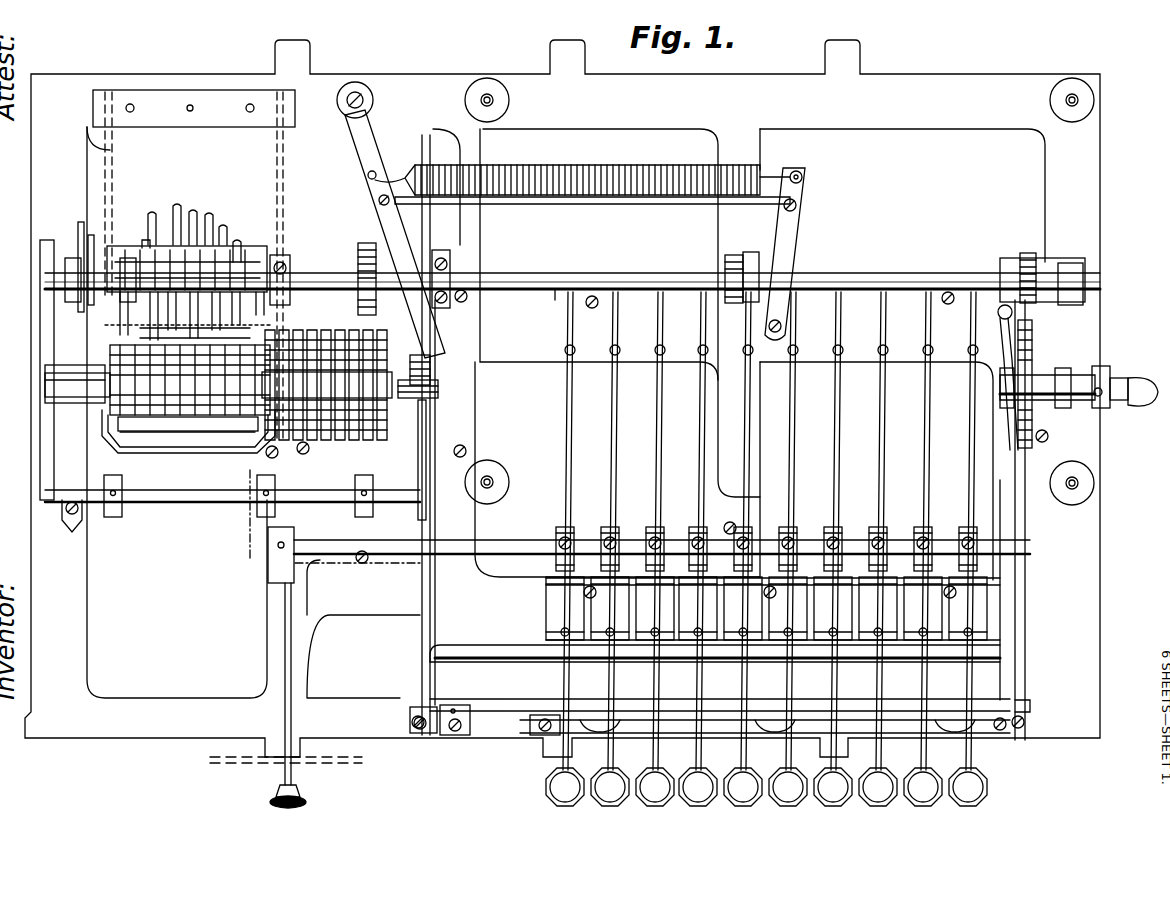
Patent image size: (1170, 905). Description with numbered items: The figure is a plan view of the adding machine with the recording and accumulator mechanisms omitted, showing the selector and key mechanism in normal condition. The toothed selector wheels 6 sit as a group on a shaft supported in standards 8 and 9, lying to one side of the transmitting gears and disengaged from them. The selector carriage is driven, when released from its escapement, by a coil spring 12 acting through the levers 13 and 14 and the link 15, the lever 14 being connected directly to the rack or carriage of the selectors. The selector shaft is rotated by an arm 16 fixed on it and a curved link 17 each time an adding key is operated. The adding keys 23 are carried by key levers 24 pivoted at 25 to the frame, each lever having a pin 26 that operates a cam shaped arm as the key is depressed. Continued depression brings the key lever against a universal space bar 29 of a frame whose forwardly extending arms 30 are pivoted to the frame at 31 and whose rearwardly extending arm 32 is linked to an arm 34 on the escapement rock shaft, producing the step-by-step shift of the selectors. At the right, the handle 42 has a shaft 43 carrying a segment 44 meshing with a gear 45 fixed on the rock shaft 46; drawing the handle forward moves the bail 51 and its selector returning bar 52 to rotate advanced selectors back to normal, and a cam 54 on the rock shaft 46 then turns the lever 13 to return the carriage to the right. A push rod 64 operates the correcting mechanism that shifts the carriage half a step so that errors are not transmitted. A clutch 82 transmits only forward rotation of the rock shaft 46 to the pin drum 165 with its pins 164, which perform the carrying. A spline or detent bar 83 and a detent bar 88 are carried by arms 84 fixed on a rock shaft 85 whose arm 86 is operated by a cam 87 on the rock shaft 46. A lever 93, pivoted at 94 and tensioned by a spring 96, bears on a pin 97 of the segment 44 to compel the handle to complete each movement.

The selector wheels 6 is at (278, 248).
The standard 8 is at (440, 394).
The standard 9 is at (47, 392).
The coil spring 12 is at (578, 172).
The lever 13 is at (795, 240).
The lever 14 is at (370, 190).
The link 15 is at (590, 206).
The arm 16 is at (432, 370).
The curved link 17 is at (427, 440).
The adding keys 23 is at (545, 787).
The key levers 24 is at (568, 683).
The pivot 25 is at (558, 296).
The pin 26 is at (560, 572).
The universal space bar 29 is at (915, 658).
The forwardly extending arms 30 is at (442, 682).
The pivot 31 is at (418, 732).
The rearwardly extending arm 32 is at (432, 605).
The arm 34 is at (468, 450).
The handle 42 is at (1140, 407).
The shaft 43 is at (1095, 380).
The segment 44 is at (1030, 368).
The gear 45 is at (1027, 253).
The rock shaft 46 is at (572, 266).
The bail 51 is at (118, 360).
The selector returning bar 52 is at (215, 368).
The cam 54 is at (757, 268).
The push rod 64 is at (284, 618).
The clutch or pawl and ratchet mechanism 82 is at (85, 255).
The spline or detent bar 83 is at (165, 447).
The arms 84 is at (115, 441).
The rock shaft 85 is at (218, 492).
The arm 86 is at (366, 480).
The cam 87 is at (362, 258).
The detent bar 88 is at (165, 432).
The lever 93 is at (1013, 438).
The pivot 94 is at (1025, 704).
The spring 96 is at (998, 313).
The pin 97 is at (1005, 365).
The pins 164 is at (205, 196).
The pin drum 165 is at (131, 248).